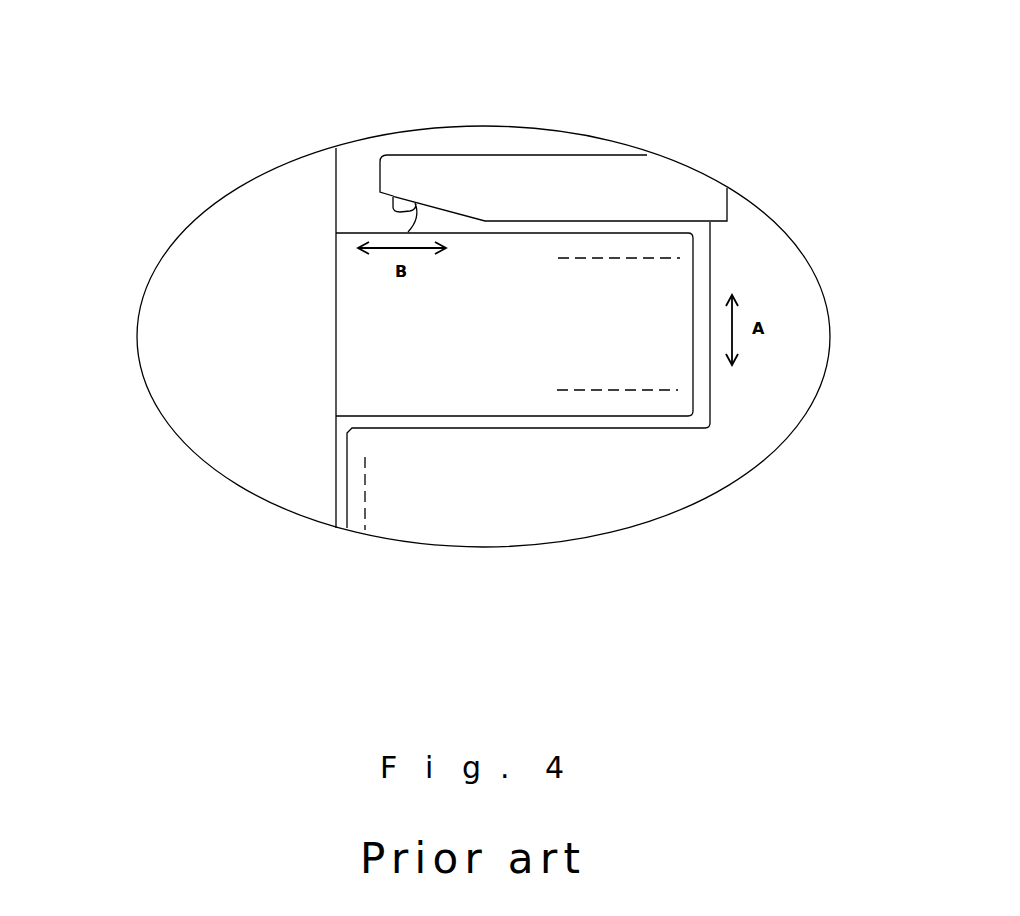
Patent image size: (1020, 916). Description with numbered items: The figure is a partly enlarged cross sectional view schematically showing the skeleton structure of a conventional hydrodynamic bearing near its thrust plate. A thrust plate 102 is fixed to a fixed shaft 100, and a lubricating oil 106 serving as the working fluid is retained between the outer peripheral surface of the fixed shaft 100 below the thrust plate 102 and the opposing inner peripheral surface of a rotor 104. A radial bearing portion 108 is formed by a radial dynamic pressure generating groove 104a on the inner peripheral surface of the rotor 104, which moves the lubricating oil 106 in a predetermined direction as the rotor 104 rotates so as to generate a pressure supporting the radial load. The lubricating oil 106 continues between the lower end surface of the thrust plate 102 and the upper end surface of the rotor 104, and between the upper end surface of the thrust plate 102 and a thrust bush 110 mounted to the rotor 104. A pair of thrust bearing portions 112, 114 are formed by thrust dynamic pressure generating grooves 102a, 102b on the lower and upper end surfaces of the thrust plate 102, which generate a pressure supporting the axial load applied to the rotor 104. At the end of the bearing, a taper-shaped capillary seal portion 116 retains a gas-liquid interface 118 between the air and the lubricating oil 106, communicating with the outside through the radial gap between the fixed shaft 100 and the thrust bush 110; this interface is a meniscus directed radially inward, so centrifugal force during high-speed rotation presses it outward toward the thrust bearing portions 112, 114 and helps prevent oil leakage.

The fixed shaft 100 is at (270, 420).
The thrust plate 102 is at (597, 310).
The thrust dynamic pressure generating groove 102a is at (613, 392).
The thrust dynamic pressure generating groove 102b is at (615, 258).
The rotor 104 is at (737, 445).
The radial dynamic pressure generating groove 104a is at (365, 497).
The lubricating oil 106 is at (343, 427).
The radial bearing portion 108 is at (343, 479).
The thrust bush 110 is at (487, 185).
The thrust bearing portion 112 is at (573, 423).
The thrust bearing portion 114 is at (582, 225).
The capillary seal portion 116 is at (397, 218).
The gas-liquid interface 118 is at (395, 203).